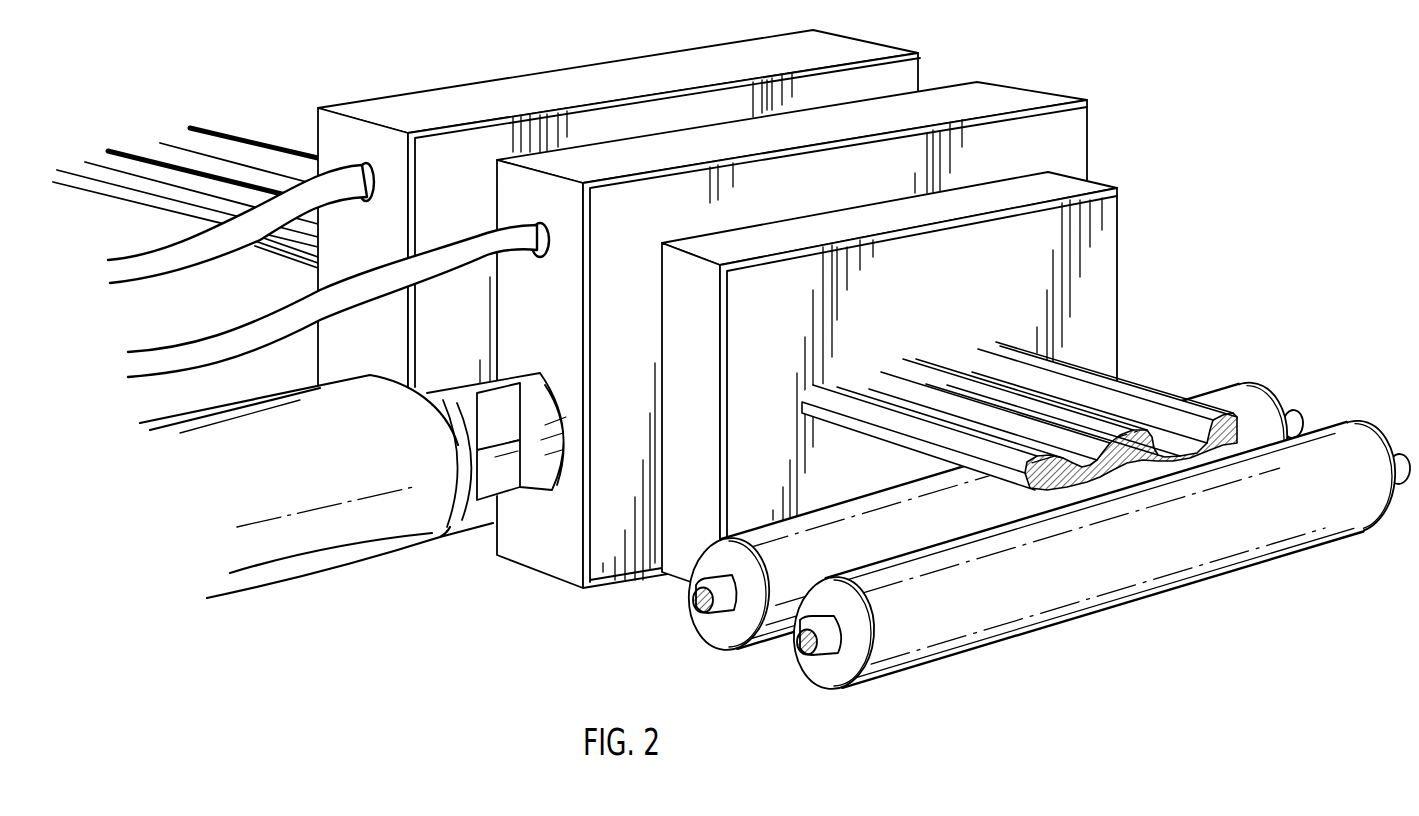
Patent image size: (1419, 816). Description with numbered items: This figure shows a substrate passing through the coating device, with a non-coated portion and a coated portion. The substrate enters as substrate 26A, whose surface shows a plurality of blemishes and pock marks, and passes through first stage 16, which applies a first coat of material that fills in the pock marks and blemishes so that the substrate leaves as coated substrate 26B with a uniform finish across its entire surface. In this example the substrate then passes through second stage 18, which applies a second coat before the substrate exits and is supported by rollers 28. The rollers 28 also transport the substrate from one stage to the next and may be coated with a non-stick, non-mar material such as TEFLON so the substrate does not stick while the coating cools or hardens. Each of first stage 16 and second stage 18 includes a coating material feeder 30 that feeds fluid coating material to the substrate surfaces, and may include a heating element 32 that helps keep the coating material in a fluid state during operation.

The first stage 16 is at (695, 57).
The second stage 18 is at (990, 97).
The substrate prior to first stage 26A is at (208, 125).
The coated substrate 26B is at (1132, 390).
The rollers 28 is at (807, 684).
The coating material feeder 30 is at (283, 580).
The heating element 32 is at (185, 270).